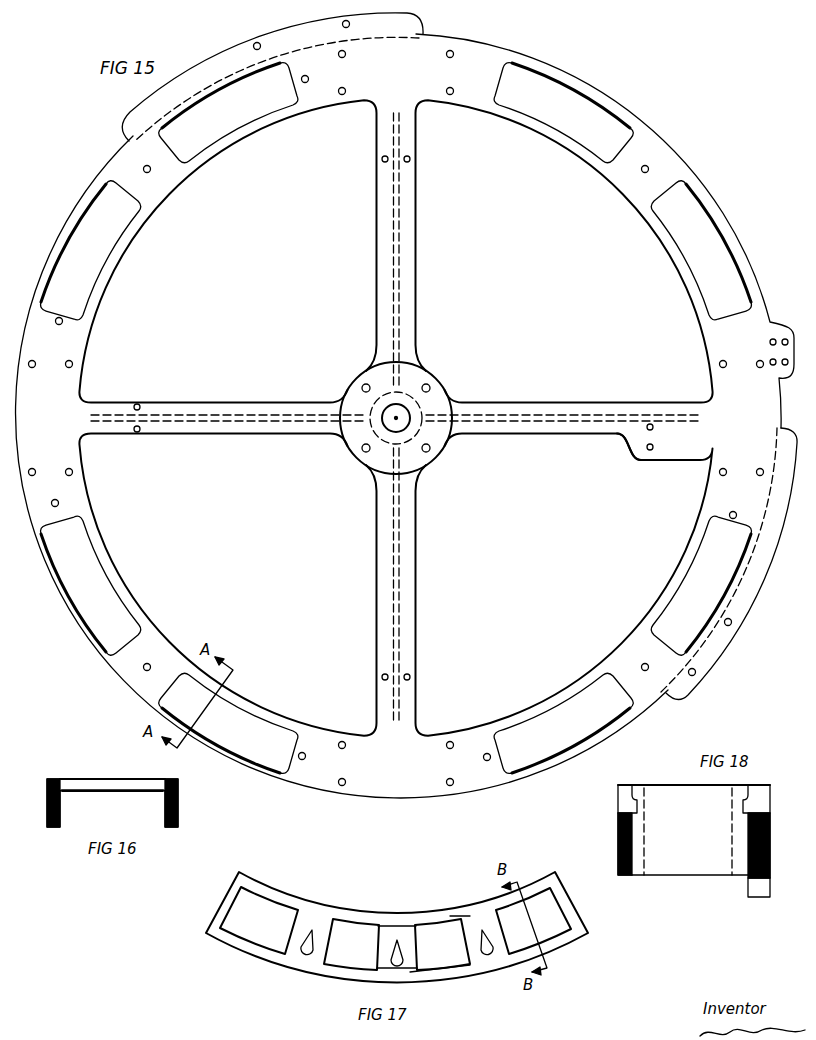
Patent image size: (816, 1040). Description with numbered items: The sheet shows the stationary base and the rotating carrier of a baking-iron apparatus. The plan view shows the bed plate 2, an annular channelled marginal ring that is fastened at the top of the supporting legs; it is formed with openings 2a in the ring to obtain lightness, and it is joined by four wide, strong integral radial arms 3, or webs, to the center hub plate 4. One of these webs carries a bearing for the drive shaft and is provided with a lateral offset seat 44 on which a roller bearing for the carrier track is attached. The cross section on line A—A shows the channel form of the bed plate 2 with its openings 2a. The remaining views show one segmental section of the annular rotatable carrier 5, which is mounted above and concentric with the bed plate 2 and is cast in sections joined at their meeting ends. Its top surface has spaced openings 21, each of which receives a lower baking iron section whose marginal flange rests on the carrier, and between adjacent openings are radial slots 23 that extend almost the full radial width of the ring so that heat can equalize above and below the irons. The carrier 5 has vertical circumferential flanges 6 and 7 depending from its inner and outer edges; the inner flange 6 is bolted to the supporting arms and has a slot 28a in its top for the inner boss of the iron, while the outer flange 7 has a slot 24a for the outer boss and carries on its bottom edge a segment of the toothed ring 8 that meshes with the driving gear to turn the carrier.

In FIG. 15, the bed plate 2 is at (385, 788).
In FIG. 16, the bed plate 2 is at (47, 792).
In FIG. 15, the openings 2a is at (118, 224).
In FIG. 16, the openings 2a is at (103, 789).
In FIG. 15, the radial arms 3 is at (405, 607).
In FIG. 15, the center hub plate 4 is at (433, 393).
In FIG. 15, the lateral offset seat 44 is at (672, 446).
In FIG. 17, the openings 21 is at (235, 928).
In FIG. 17, the radial slots 23 is at (423, 947).
In FIG. 17, the annular rotatable carrier 5 is at (383, 920).
In FIG. 18, the annular rotatable carrier 5 is at (657, 795).
In FIG. 17, the slot 28a is at (433, 920).
In FIG. 18, the slot 28a is at (627, 802).
In FIG. 17, the slot 24a is at (445, 973).
In FIG. 18, the slot 24a is at (760, 792).
In FIG. 18, the inner flange 6 is at (630, 855).
In FIG. 18, the outer flange 7 is at (768, 848).
In FIG. 18, the toothed ring 8 is at (763, 887).